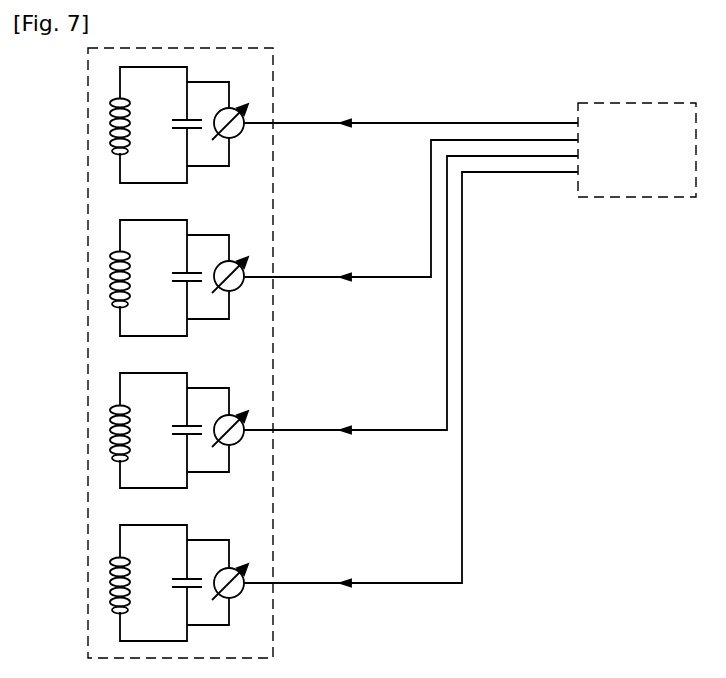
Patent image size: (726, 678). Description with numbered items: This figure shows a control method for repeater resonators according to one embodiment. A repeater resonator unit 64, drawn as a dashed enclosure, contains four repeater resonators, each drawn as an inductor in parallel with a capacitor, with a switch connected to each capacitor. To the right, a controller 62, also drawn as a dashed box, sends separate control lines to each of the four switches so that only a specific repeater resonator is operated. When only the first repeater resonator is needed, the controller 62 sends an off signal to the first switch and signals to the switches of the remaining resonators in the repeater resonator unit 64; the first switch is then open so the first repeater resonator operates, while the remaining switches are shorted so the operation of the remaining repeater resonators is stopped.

The controller 62 is at (635, 198).
The repeater resonator unit 64 is at (273, 70).